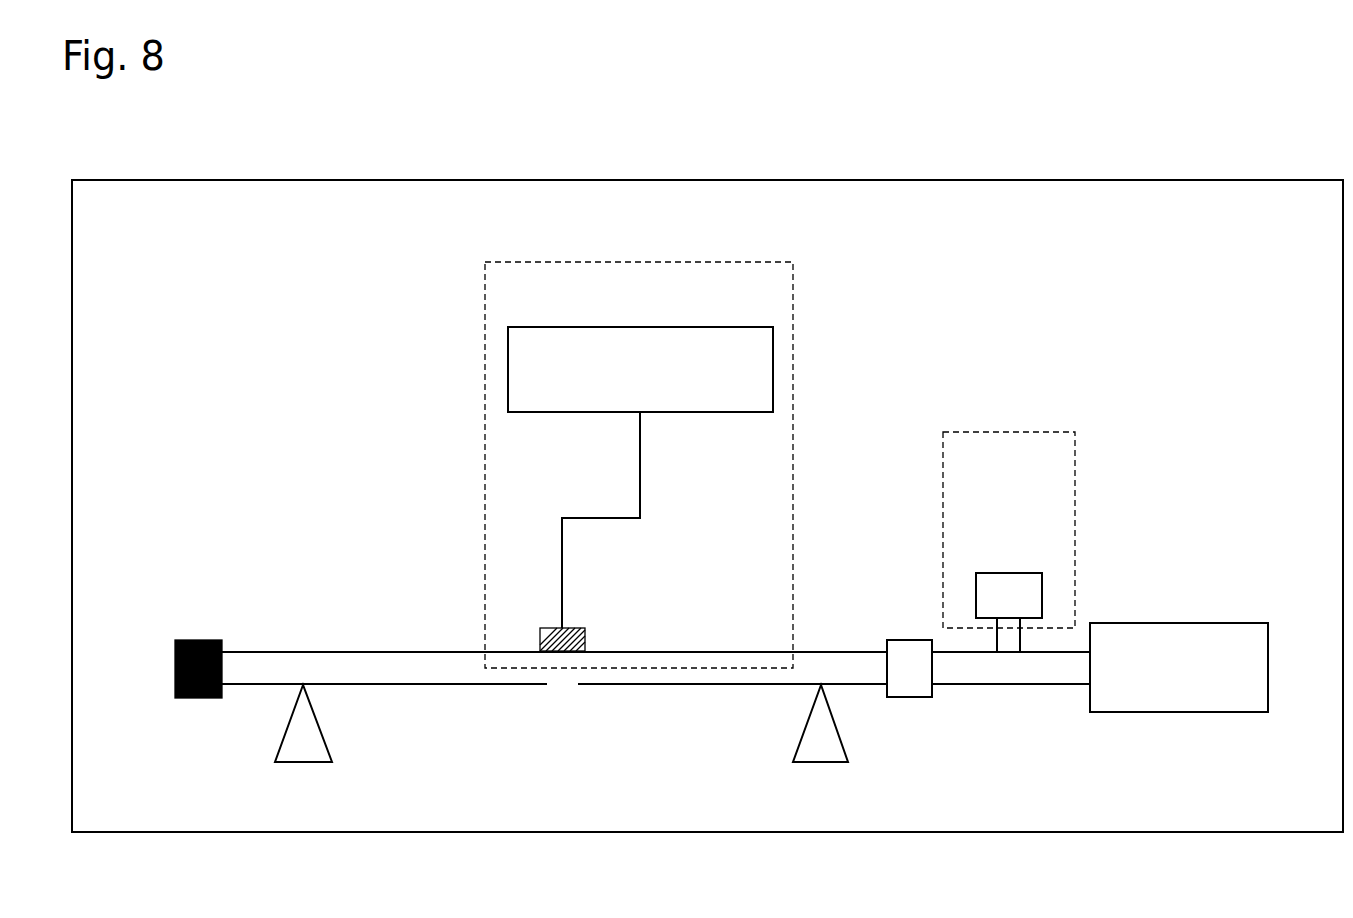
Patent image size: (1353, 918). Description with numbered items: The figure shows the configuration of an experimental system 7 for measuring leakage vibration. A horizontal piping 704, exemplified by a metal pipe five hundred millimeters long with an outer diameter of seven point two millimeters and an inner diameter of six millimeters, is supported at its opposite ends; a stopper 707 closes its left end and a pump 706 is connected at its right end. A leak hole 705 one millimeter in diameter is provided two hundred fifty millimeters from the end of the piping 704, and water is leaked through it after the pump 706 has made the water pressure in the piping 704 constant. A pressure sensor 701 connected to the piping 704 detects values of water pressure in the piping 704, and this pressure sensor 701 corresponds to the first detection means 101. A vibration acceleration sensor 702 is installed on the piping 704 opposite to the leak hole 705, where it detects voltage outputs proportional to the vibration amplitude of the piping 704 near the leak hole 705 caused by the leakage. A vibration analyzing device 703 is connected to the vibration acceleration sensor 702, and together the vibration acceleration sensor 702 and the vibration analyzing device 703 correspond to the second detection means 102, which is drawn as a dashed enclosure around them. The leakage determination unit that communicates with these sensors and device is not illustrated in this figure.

The experimental system for measuring leakage vibration 7 is at (261, 178).
The second detection means 102 is at (795, 282).
The vibration analyzing device 703 is at (775, 357).
The vibration acceleration sensor 702 is at (588, 640).
The piping 704 is at (350, 652).
The leak hole 705 is at (563, 690).
The stopper 707 is at (195, 640).
The first detection means 101 is at (1024, 432).
The pressure sensor 701 is at (1043, 593).
The pump 706 is at (1225, 623).